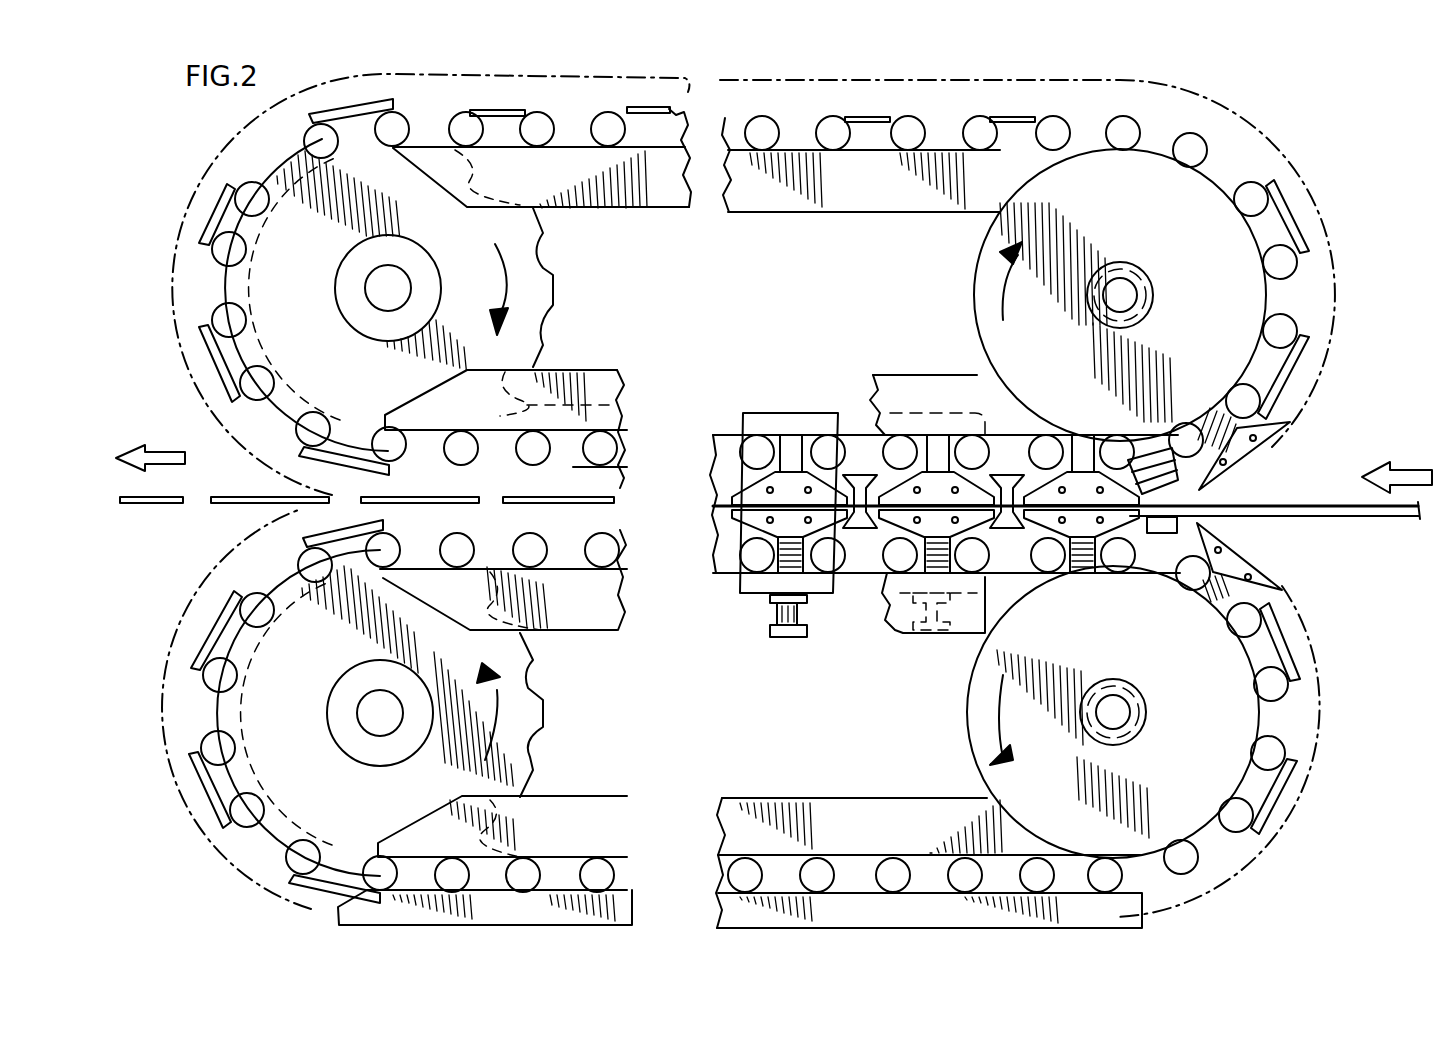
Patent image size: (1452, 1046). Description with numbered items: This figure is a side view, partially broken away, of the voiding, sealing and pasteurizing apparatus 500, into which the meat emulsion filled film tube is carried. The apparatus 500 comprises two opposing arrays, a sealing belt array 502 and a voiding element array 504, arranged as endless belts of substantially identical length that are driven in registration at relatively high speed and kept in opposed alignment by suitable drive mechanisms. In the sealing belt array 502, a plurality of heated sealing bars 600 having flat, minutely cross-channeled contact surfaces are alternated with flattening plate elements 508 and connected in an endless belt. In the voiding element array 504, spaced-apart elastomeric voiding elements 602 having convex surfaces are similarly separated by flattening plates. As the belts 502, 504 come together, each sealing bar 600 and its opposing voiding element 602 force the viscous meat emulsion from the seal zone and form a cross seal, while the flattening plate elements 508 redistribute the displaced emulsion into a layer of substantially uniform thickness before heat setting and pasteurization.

The voiding, sealing and pasteurizing apparatus 500 is at (1332, 792).
The sealing belt array 502 is at (1247, 402).
The voiding element array 504 is at (1240, 610).
The flattening plate element 508 is at (802, 477).
The sealing bar 600 is at (1007, 490).
The elastomeric voiding element 602 is at (1010, 523).